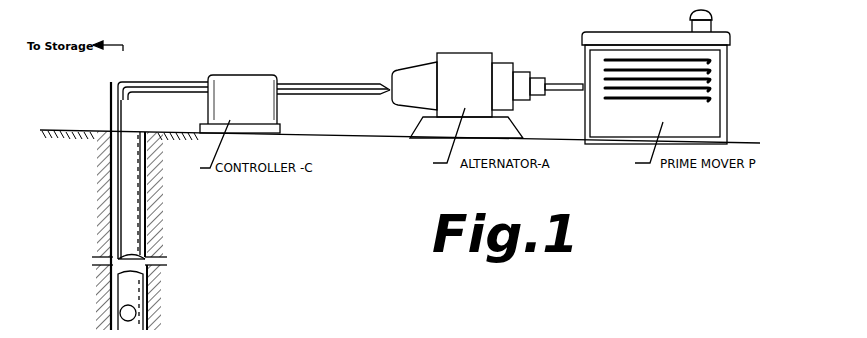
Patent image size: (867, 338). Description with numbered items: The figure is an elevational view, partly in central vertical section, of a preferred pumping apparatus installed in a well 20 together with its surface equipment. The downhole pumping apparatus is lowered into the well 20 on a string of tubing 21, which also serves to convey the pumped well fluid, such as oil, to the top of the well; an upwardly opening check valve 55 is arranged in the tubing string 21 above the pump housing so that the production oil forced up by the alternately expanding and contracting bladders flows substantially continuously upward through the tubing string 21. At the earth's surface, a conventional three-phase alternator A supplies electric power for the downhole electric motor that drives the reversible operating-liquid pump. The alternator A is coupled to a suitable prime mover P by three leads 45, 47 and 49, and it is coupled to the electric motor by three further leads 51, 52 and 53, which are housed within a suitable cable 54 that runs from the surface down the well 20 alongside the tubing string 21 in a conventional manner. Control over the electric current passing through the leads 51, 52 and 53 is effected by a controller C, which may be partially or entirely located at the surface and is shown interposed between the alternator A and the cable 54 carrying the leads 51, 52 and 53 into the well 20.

The well 20 is at (142, 185).
The string of tubing 21 is at (143, 283).
The lead 45 is at (338, 84).
The lead 47 is at (362, 92).
The lead 49 is at (335, 97).
The lead 51 is at (152, 80).
The lead 52 is at (175, 86).
The lead 53 is at (193, 93).
The cable 54 is at (118, 173).
The check valve 55 is at (136, 313).